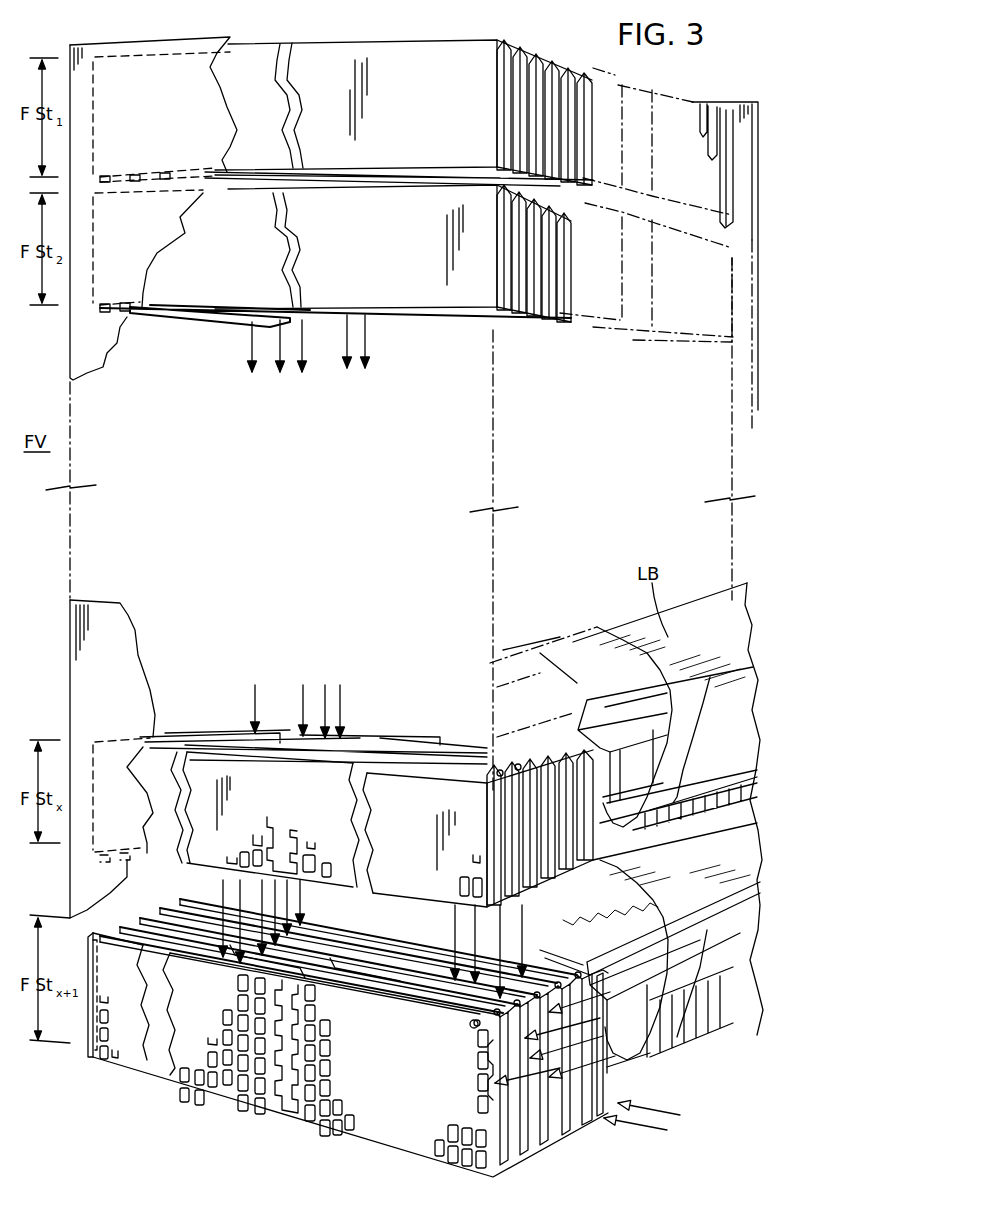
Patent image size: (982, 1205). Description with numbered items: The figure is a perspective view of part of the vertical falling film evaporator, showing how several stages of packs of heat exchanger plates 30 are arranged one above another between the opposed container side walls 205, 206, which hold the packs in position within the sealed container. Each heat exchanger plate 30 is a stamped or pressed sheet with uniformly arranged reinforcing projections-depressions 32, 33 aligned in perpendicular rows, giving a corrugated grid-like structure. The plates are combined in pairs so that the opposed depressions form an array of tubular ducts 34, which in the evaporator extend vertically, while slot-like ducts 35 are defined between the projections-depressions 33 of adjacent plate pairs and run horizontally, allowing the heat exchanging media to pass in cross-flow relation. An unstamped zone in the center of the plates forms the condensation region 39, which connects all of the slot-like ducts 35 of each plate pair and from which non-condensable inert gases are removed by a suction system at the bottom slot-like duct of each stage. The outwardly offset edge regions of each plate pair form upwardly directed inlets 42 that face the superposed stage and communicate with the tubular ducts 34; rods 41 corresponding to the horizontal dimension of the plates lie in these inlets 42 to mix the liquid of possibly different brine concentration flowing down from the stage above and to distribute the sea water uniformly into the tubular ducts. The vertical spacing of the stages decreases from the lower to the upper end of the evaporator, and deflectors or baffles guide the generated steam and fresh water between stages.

The heat exchanger plate 30 is at (424, 122).
The reinforcing projections-depressions 32 is at (310, 1118).
The reinforcing projections-depressions 33 is at (345, 1120).
The tubular ducts 34 is at (470, 1030).
The slot-like ducts 35 is at (478, 1100).
The condensation region 39 is at (283, 827).
The rods 41 is at (518, 766).
The inlets 42 is at (370, 990).
The container side wall 205 is at (70, 603).
The container side wall 206 is at (735, 102).